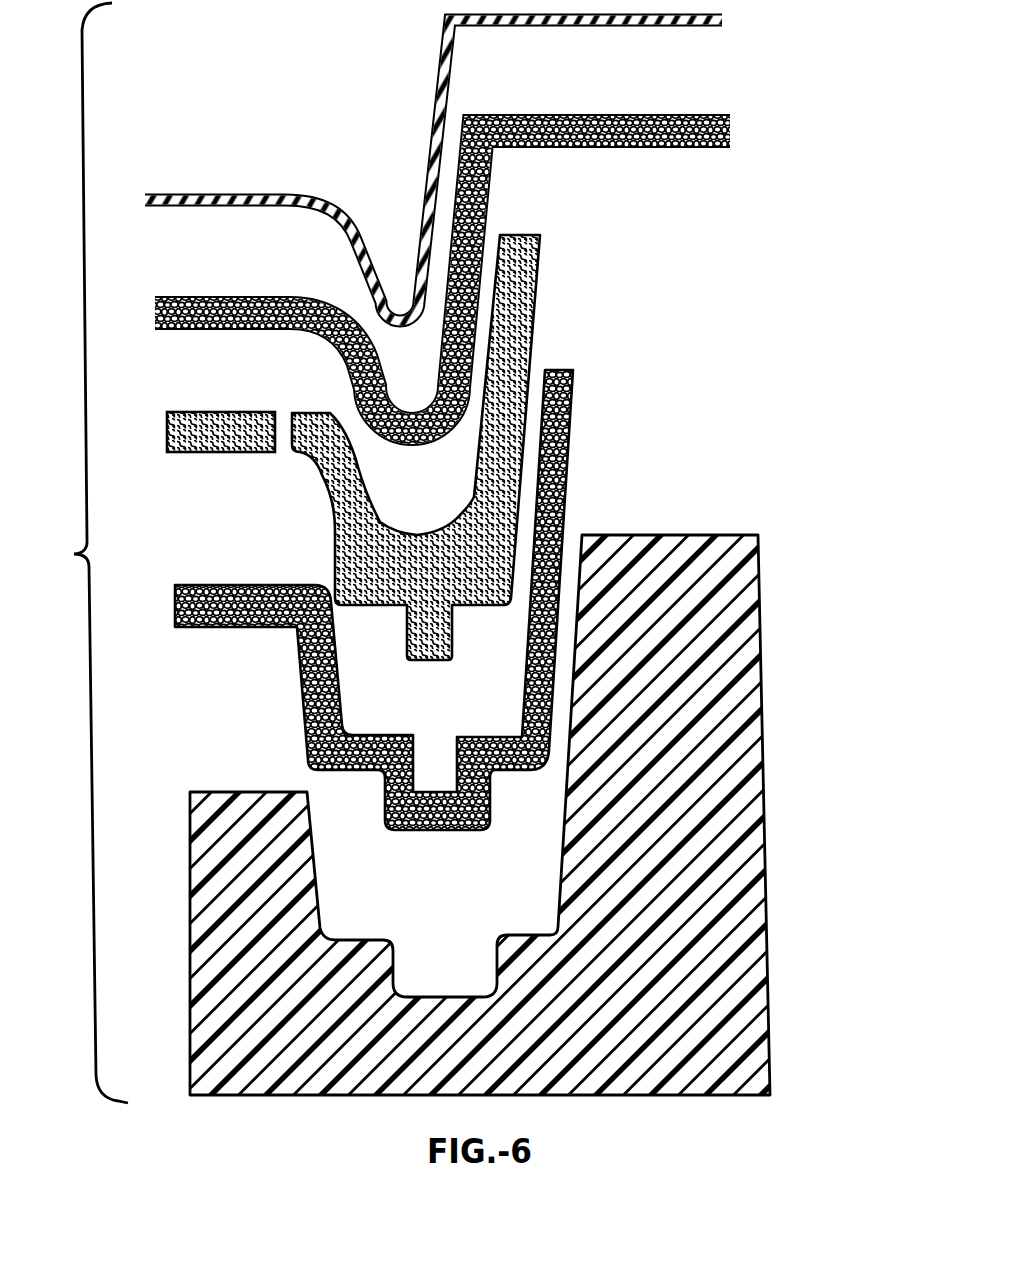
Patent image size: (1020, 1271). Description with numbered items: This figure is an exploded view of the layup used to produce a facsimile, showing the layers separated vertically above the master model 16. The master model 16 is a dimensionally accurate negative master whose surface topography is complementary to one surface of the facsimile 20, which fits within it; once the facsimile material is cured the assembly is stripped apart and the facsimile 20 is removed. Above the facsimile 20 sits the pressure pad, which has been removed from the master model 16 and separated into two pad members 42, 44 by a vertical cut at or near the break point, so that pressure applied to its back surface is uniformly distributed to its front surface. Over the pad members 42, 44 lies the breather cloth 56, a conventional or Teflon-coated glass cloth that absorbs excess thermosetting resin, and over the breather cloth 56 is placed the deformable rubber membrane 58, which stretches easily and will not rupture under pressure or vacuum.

The master model 16 is at (763, 697).
The facsimile 20 is at (572, 418).
The pad member 42 is at (167, 447).
The pad member 44 is at (522, 234).
The breather cloth 56 is at (707, 150).
The deformable rubber membrane 58 is at (220, 193).